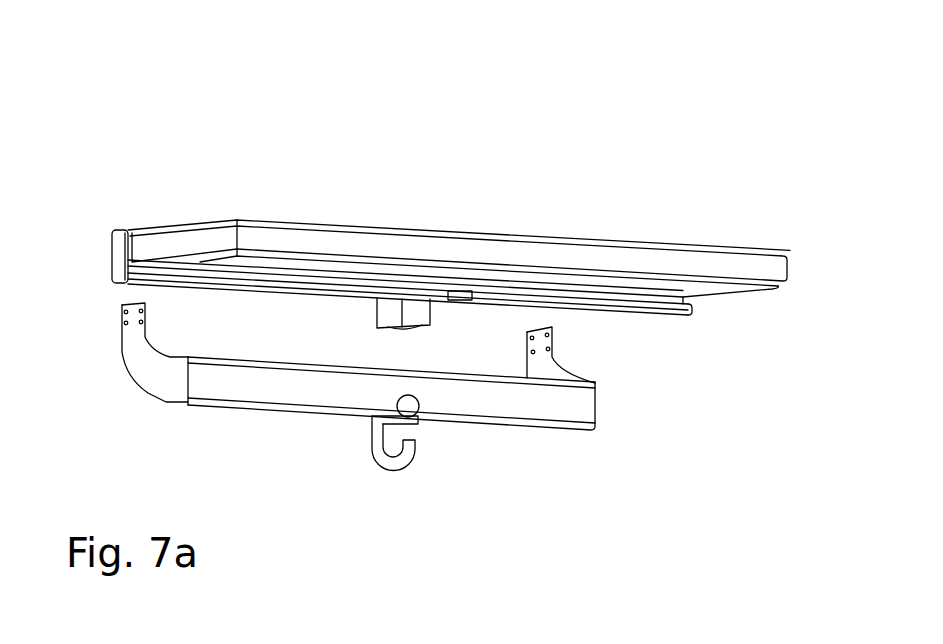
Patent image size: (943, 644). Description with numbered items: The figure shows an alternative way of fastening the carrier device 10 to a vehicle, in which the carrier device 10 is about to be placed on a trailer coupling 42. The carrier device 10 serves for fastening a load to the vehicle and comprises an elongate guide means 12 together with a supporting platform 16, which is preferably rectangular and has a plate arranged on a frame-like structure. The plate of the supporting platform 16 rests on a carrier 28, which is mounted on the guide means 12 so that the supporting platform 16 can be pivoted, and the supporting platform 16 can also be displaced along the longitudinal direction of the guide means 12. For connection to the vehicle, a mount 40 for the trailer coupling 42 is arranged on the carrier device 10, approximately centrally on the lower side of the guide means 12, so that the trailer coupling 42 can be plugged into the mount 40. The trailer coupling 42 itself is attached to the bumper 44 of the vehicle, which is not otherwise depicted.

The carrier device 10 is at (530, 168).
The guide means 12 is at (678, 314).
The supporting platform 16 is at (612, 239).
The carrier 28 is at (713, 267).
The mount 40 is at (377, 320).
The trailer coupling 42 is at (418, 445).
The bumper 44 is at (582, 407).